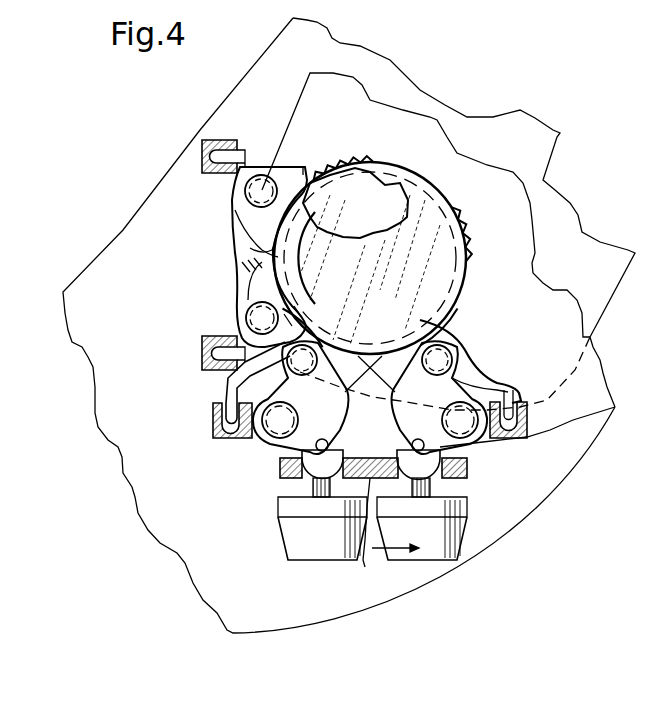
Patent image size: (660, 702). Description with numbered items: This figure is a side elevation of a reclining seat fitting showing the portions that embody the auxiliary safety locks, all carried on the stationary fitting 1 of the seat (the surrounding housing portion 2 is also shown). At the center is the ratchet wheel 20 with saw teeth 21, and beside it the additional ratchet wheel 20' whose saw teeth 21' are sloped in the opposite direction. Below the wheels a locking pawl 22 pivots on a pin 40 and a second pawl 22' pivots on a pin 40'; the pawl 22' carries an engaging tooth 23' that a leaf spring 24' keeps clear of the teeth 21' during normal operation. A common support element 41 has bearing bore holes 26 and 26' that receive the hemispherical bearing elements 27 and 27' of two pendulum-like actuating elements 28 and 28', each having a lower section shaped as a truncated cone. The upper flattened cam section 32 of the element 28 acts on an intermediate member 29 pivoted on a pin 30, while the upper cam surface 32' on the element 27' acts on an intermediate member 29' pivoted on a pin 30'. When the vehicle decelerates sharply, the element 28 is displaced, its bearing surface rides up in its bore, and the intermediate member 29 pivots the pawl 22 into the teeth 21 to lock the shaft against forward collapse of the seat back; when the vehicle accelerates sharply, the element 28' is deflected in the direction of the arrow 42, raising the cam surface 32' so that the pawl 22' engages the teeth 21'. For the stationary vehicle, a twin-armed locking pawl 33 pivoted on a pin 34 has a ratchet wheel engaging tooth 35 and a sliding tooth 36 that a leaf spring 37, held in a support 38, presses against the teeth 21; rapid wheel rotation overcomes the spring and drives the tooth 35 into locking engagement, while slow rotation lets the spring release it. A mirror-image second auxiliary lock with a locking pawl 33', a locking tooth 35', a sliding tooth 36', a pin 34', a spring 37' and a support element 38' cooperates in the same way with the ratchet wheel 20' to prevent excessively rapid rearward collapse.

The stationary fitting 1 is at (213, 600).
The housing wall 2 is at (543, 147).
The ratchet wheel 20 is at (378, 241).
The ratchet wheel 20' is at (357, 176).
The saw teeth 21 is at (480, 227).
The saw teeth 21' is at (347, 149).
The locking pawl 22 is at (433, 387).
The pawl 22' is at (324, 397).
The engaging tooth 23' is at (370, 320).
The leaf spring 24' is at (198, 414).
The bore 26 is at (446, 502).
The bearing bore hole 26' is at (302, 510).
The bearing element 27 is at (426, 461).
The bearing element 27' is at (277, 483).
The actuating element 28 is at (431, 543).
The actuating element 28' is at (322, 552).
The intermediate member 29 is at (527, 419).
The intermediate member 29' is at (257, 447).
The pin 30 is at (529, 399).
The pin 30' is at (394, 408).
The upper flattened cam section 32 is at (401, 436).
The upper cam surface 32' is at (344, 441).
The locking pawl 33 is at (221, 268).
The locking pawl 33' is at (225, 215).
The pin 34 is at (233, 304).
The pin 34' is at (248, 132).
The ratchet wheel engaging tooth 35 is at (220, 238).
The locking tooth 35' is at (289, 253).
The sliding tooth 36 is at (304, 303).
The sliding tooth 36' is at (324, 140).
The leaf spring 37 is at (220, 383).
The spring 37' is at (269, 209).
The support 38 is at (199, 336).
The support element 38' is at (208, 119).
The pin 40 is at (465, 341).
The pin 40' is at (286, 373).
The common support element 41 is at (373, 537).
The arrow 42 is at (391, 549).